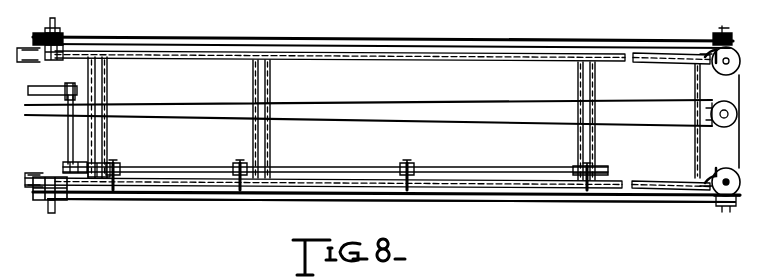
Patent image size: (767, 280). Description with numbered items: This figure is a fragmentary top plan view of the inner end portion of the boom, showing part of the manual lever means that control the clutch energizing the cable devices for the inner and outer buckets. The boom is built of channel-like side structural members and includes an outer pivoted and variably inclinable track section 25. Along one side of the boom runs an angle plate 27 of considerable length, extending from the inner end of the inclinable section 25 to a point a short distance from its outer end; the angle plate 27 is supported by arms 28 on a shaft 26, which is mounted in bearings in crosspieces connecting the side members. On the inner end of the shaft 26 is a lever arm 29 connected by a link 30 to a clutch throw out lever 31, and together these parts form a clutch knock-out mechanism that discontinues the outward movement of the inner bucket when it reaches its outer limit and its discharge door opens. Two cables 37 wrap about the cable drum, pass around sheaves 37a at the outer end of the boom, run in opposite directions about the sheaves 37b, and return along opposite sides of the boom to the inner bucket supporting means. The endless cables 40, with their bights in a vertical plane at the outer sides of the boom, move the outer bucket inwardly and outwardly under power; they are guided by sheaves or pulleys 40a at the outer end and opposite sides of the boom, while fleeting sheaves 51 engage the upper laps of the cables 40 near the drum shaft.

The outer pivoted and variably inclinable track section 25 is at (350, 52).
The shaft 26 is at (352, 167).
The angle plate 27 is at (173, 189).
The arms 28 is at (115, 182).
The lever arm 29 is at (95, 162).
The link 30 is at (68, 143).
The clutch throw out lever 31 is at (35, 88).
The cables 37 is at (664, 101).
The sheaves 37a is at (724, 101).
The sheaves 37b is at (714, 64).
The cables 40 is at (281, 38).
The sheaves or pulleys 40a is at (722, 46).
The fleeting sheaves 51 is at (62, 36).